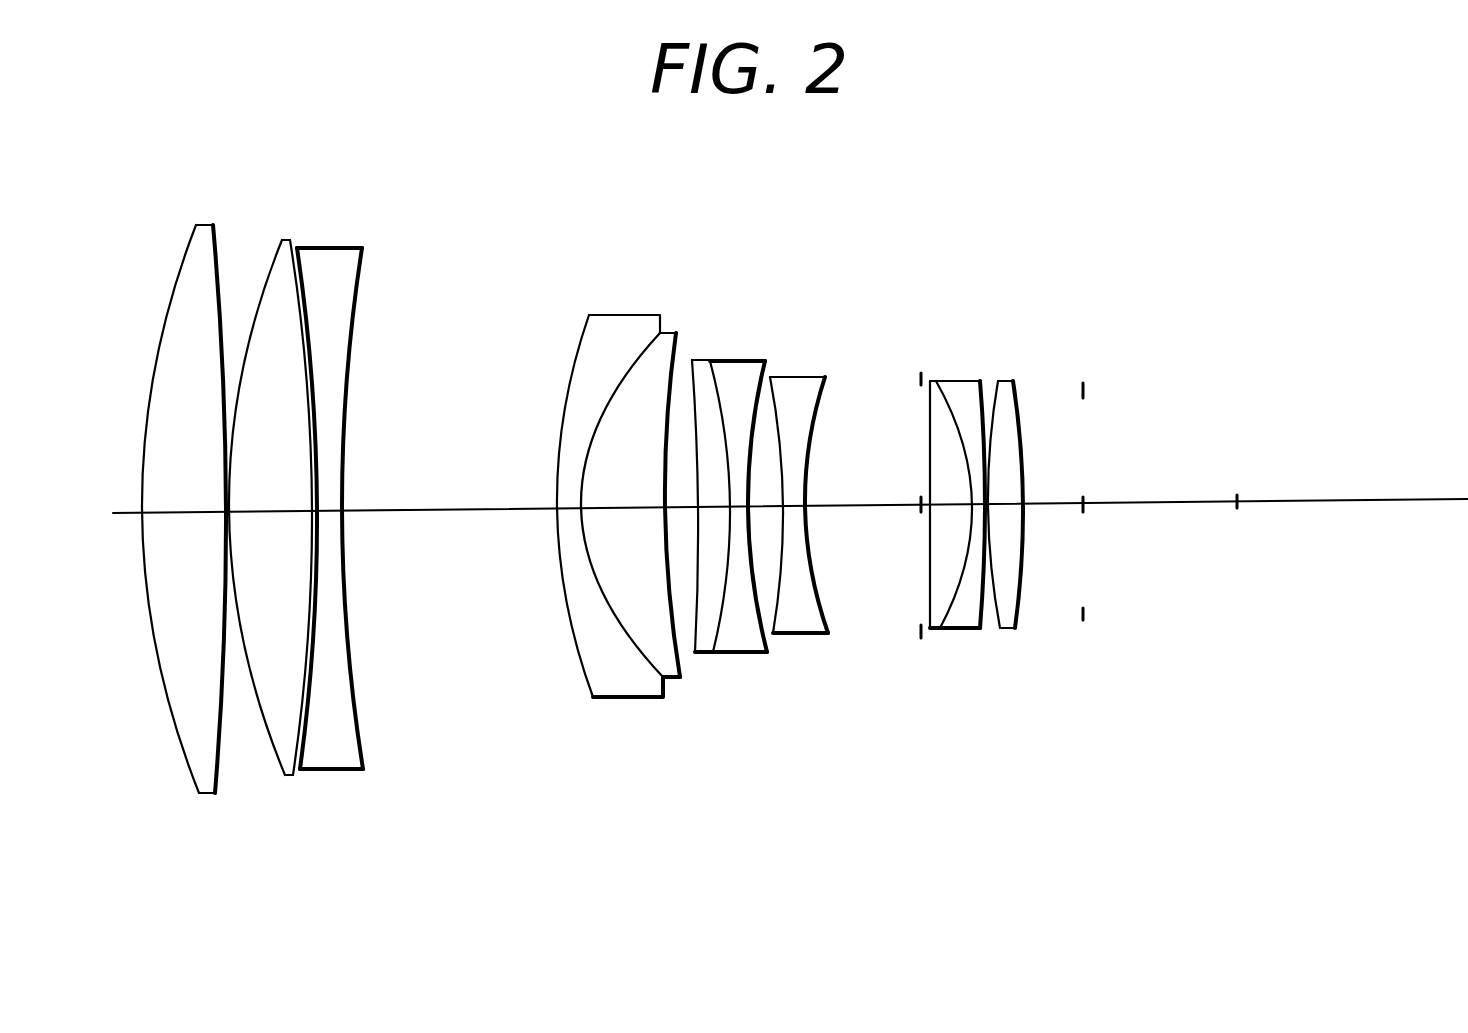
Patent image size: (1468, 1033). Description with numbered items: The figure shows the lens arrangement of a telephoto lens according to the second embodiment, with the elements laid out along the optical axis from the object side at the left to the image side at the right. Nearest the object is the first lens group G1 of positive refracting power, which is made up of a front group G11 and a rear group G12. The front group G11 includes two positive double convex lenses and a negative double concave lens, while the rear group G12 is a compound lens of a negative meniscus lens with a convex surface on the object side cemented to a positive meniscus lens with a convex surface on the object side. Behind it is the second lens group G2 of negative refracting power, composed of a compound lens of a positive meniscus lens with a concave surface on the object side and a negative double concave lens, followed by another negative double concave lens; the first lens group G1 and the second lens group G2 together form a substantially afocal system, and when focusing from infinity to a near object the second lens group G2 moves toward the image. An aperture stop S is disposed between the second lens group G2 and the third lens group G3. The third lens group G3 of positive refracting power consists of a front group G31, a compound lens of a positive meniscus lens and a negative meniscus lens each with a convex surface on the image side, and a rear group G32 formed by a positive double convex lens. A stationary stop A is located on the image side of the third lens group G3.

The first lens group G1 is at (416, 555).
The front group G11 is at (371, 790).
The rear group G12 is at (623, 534).
The second lens group G2 is at (838, 653).
The third lens group G3 is at (983, 562).
The front group G31 is at (986, 633).
The rear group G32 is at (1012, 535).
The aperture stop S is at (917, 484).
The stationary stop A is at (1083, 480).